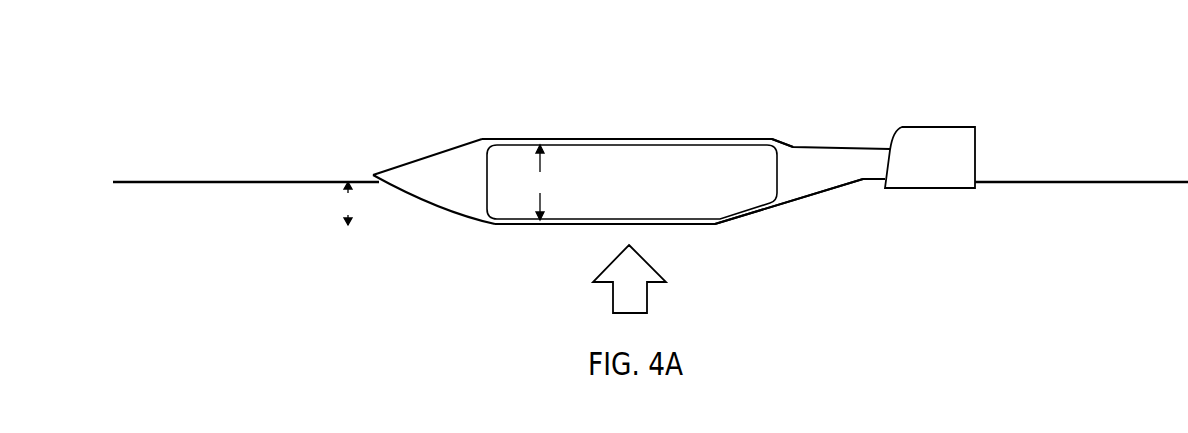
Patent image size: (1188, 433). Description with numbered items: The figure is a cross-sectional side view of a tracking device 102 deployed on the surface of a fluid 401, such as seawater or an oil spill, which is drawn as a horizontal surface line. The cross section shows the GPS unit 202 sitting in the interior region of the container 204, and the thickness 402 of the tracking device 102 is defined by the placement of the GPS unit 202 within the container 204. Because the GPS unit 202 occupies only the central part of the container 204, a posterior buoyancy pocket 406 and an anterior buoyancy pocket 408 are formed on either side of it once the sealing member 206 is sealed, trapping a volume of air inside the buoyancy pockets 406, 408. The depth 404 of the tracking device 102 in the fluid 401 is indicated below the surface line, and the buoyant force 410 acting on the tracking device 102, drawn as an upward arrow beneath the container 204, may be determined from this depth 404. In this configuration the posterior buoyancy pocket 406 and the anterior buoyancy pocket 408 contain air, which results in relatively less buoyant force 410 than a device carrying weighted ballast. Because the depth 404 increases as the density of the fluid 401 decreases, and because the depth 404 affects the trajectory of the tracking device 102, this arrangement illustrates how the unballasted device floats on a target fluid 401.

The tracking device 102 is at (1014, 127).
The GPS unit 202 is at (637, 182).
The container 204 is at (416, 155).
The sealing member 206 is at (928, 188).
The fluid 401 is at (193, 182).
The thickness 402 is at (540, 182).
The depth 404 is at (348, 203).
The posterior buoyancy pocket 406 is at (443, 177).
The anterior buoyancy pocket 408 is at (807, 175).
The buoyant force 410 is at (629, 279).